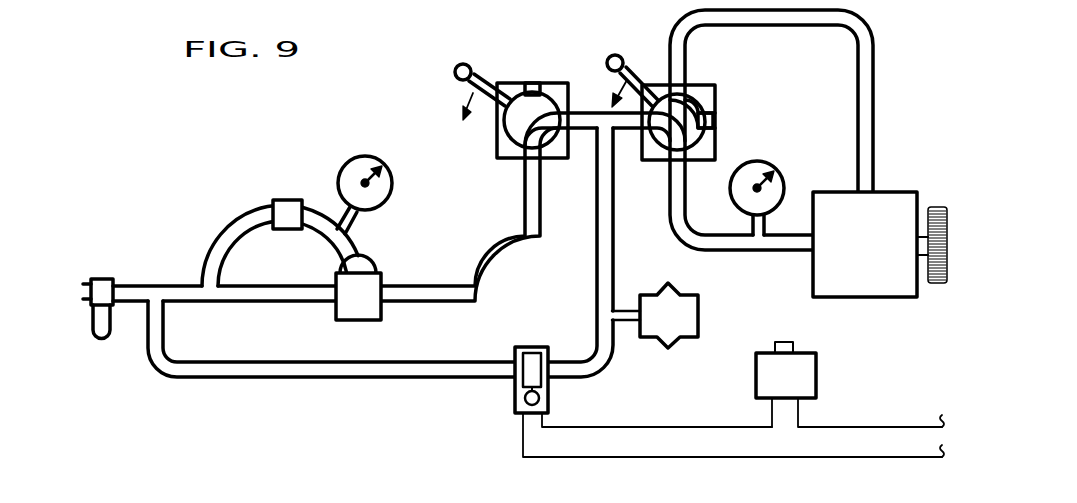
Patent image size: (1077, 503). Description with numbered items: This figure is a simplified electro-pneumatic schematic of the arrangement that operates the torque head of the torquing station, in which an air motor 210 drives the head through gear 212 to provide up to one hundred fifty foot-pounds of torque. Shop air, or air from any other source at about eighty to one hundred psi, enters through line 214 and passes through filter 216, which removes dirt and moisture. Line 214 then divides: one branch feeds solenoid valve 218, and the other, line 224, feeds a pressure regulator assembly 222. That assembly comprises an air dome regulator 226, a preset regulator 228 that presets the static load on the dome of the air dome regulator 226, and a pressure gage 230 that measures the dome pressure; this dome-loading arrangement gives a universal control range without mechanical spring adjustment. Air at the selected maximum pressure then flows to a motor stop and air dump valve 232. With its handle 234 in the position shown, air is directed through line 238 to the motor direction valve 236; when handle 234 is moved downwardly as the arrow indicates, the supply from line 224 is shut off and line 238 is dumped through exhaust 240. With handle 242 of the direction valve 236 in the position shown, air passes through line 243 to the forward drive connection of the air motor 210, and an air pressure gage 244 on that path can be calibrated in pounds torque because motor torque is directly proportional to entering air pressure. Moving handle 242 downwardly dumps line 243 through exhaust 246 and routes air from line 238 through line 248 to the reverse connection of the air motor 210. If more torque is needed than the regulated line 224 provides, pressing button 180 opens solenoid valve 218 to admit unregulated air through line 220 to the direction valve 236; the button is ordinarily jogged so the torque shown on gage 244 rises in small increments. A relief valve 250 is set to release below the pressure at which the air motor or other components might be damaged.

The button 180 is at (793, 347).
The air motor 210 is at (895, 298).
The gear 212 is at (938, 207).
The line 214 is at (102, 276).
The filter 216 is at (105, 338).
The solenoid valve 218 is at (515, 397).
The line 220 is at (168, 377).
The pressure regulator assembly 222 is at (208, 183).
The line 224 is at (183, 285).
The air dome regulator 226 is at (371, 262).
The preset regulator 228 is at (287, 200).
The pressure gage 230 is at (392, 176).
The motor stop and air dump valve 232 is at (563, 83).
The handle 234 is at (460, 64).
The motor direction valve 236 is at (698, 85).
The line 238 is at (583, 135).
The exhaust 240 is at (528, 83).
The handle 242 is at (619, 56).
The line 243 is at (740, 252).
The air pressure gage 244 is at (776, 175).
The exhaust 246 is at (716, 120).
The line 248 is at (875, 62).
The relief valve 250 is at (685, 338).